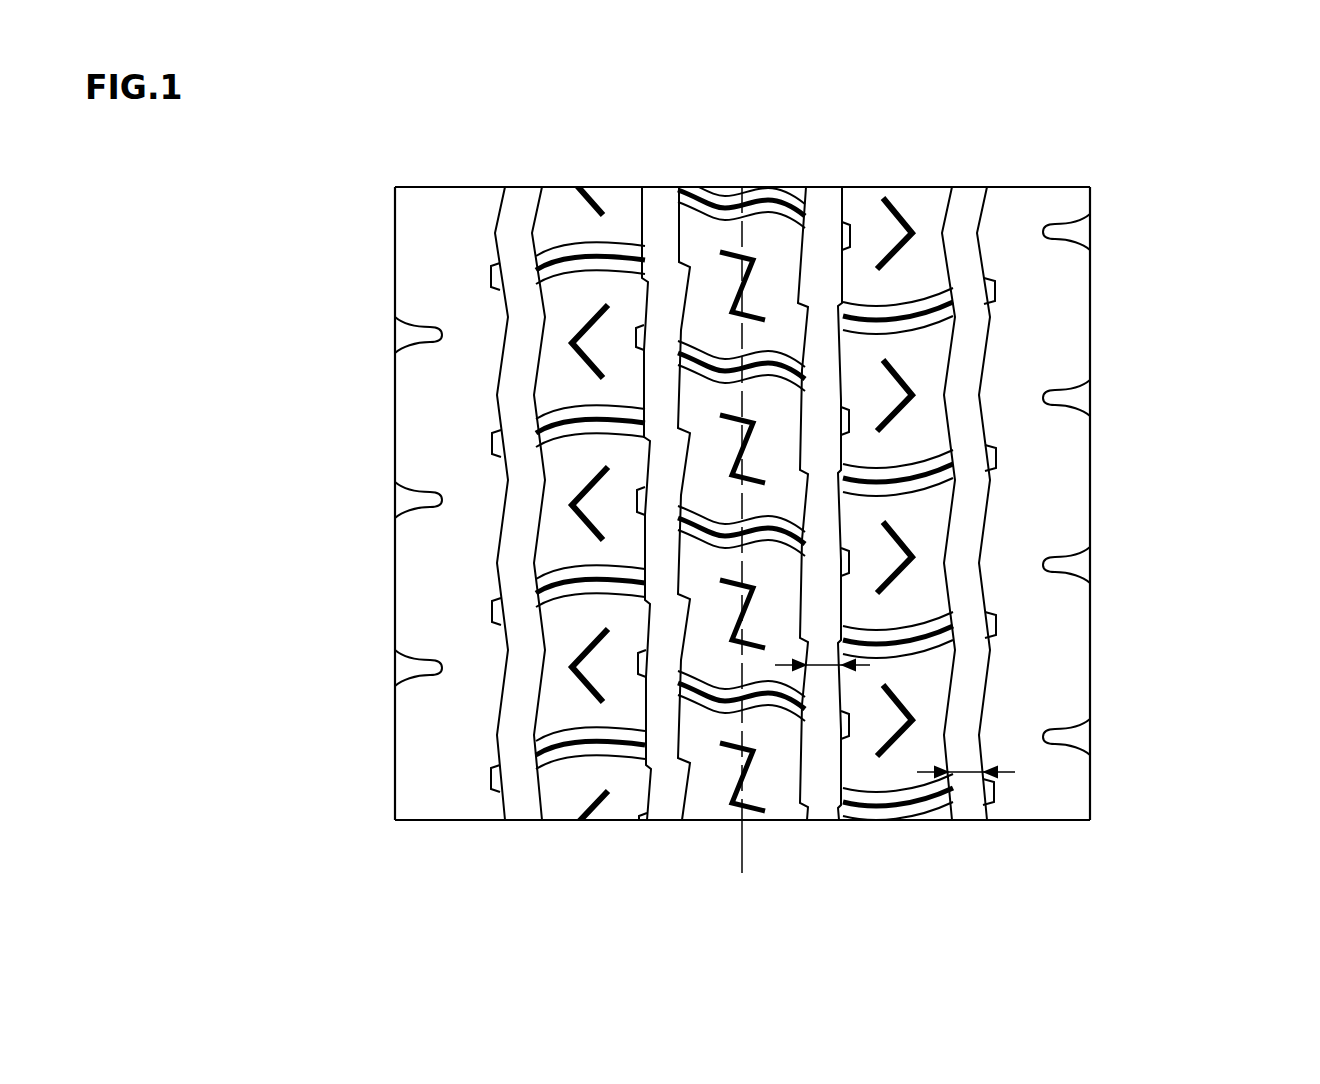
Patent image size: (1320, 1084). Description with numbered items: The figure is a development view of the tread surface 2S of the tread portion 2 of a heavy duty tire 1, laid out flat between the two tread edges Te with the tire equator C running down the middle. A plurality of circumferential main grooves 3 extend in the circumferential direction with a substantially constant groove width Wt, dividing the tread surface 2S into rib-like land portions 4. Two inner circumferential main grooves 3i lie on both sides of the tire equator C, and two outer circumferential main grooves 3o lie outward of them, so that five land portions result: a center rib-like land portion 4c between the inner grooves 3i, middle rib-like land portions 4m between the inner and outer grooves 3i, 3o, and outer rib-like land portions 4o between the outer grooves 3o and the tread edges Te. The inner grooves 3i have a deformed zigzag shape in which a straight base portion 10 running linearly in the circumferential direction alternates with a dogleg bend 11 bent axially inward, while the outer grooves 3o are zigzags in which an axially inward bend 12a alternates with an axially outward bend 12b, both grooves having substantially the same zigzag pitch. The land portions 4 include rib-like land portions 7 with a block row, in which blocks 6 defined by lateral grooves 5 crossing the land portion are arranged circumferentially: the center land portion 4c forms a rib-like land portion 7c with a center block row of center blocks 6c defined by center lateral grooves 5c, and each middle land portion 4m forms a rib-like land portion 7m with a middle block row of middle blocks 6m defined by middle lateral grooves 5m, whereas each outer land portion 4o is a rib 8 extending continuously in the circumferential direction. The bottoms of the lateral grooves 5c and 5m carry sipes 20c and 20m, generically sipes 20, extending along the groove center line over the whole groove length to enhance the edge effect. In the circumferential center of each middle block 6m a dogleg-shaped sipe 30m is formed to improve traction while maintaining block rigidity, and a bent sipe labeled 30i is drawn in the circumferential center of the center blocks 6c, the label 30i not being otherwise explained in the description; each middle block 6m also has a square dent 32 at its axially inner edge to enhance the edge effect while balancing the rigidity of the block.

The heavy duty tire 1 is at (1122, 221).
The tread portion 2 is at (836, 503).
The tread surface 2S is at (1110, 289).
The tread edge Te is at (395, 251).
The circumferential main grooves 3 is at (747, 512).
The outer circumferential main groove 3o is at (522, 202).
The inner circumferential main groove 3i is at (661, 202).
The rib-like land portions 4 is at (760, 528).
The outer rib-like land portion 4o is at (500, 183).
The middle rib-like land portion 4m is at (645, 183).
The center rib-like land portion 4c is at (679, 183).
The lateral grooves 5 is at (706, 449).
The center lateral groove 5c is at (1200, 383).
The middle lateral groove 5m is at (548, 402).
The blocks 6 is at (697, 813).
The center block 6c is at (697, 556).
The middle block 6m is at (553, 813).
The rib-like land portion with a block row 7 is at (794, 823).
The rib-like land portion with a center block row 7c is at (815, 556).
The rib-like land portion with a middle block row 7m is at (610, 823).
The rib 8 is at (445, 823).
The straight base portion 10 is at (636, 541).
The dogleg bend 11 is at (633, 614).
The axially inward bend 12a is at (498, 667).
The axially outward bend 12b is at (491, 733).
The sipes 20 is at (1014, 367).
The sipe in center lateral groove 20c is at (1014, 367).
The sipe in middle lateral groove 20m is at (870, 478).
The dogleg-shaped sipe 30m is at (870, 528).
The inner groove wall 30i is at (755, 596).
The square dent 32 is at (1045, 727).
The groove width Wt is at (870, 665).
The tire equator C is at (749, 850).